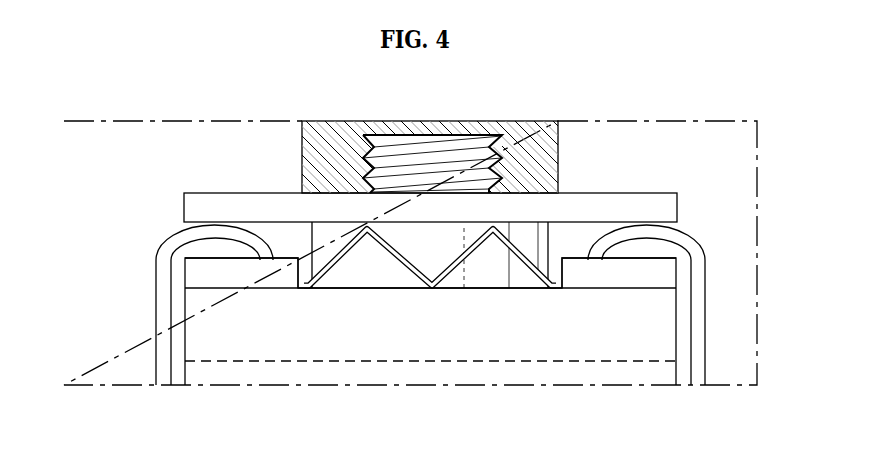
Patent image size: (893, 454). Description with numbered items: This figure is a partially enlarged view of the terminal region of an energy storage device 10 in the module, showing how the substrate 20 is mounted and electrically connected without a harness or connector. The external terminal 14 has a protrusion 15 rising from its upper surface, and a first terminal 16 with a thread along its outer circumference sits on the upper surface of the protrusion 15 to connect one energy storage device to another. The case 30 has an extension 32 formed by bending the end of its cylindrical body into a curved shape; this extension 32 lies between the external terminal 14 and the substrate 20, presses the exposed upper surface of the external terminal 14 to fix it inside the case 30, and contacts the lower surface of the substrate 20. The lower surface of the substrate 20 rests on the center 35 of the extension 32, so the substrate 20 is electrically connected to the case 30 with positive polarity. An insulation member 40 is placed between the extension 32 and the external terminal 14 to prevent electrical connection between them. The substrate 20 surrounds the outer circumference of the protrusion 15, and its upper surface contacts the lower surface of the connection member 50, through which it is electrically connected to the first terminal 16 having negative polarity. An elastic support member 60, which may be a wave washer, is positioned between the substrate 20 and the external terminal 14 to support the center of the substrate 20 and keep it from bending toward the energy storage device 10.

The energy storage device 10 is at (683, 326).
The external terminal 14 is at (573, 362).
The protrusion 15 is at (548, 238).
The first terminal 16 is at (374, 151).
The substrate 20 is at (213, 198).
The case 30 is at (151, 353).
The extension 32 is at (146, 249).
The center 35 is at (217, 228).
The insulation member 40 is at (223, 277).
The connection member 50 is at (559, 152).
The support member 60 is at (340, 250).